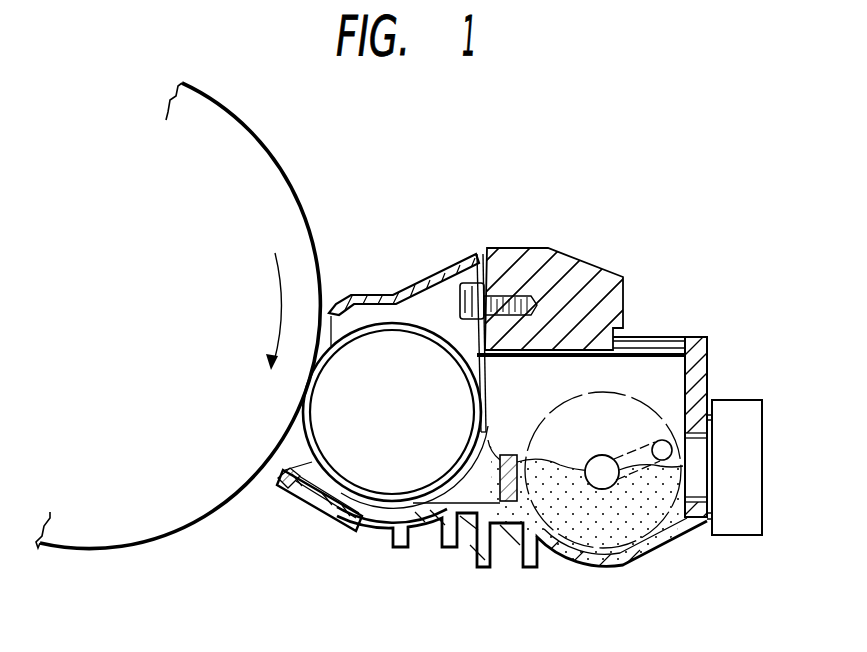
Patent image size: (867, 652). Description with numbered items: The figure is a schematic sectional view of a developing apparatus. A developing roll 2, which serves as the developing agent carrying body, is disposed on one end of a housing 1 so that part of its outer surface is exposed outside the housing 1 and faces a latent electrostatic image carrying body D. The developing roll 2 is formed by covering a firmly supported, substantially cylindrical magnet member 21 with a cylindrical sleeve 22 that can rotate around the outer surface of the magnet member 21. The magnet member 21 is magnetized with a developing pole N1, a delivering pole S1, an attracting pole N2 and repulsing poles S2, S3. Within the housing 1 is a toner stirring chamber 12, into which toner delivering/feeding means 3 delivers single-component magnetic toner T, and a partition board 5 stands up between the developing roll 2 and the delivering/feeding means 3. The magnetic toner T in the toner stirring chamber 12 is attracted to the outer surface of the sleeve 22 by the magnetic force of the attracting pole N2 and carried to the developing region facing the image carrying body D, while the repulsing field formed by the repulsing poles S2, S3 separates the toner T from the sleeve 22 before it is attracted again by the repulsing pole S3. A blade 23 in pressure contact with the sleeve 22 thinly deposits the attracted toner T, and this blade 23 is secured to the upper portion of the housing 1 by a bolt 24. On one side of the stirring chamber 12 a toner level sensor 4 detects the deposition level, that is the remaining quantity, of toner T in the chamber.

The latent electrostatic image carrying body D is at (197, 316).
The housing 1 is at (528, 528).
The developing roll 2 is at (392, 460).
The toner delivering/feeding means 3 is at (603, 504).
The toner level sensor 4 is at (735, 421).
The partition board 5 is at (482, 542).
The toner stirring chamber 12 is at (572, 414).
The magnet member 21 is at (319, 517).
The sleeve 22 is at (361, 395).
The blade 23 is at (487, 396).
The bolt 24 is at (493, 259).
The magnetic toner T is at (586, 537).
The developing pole N1 is at (335, 381).
The delivering pole S1 is at (408, 349).
The attracting pole N2 is at (455, 407).
The repulsing pole S2 is at (342, 456).
The repulsing pole S3 is at (417, 476).